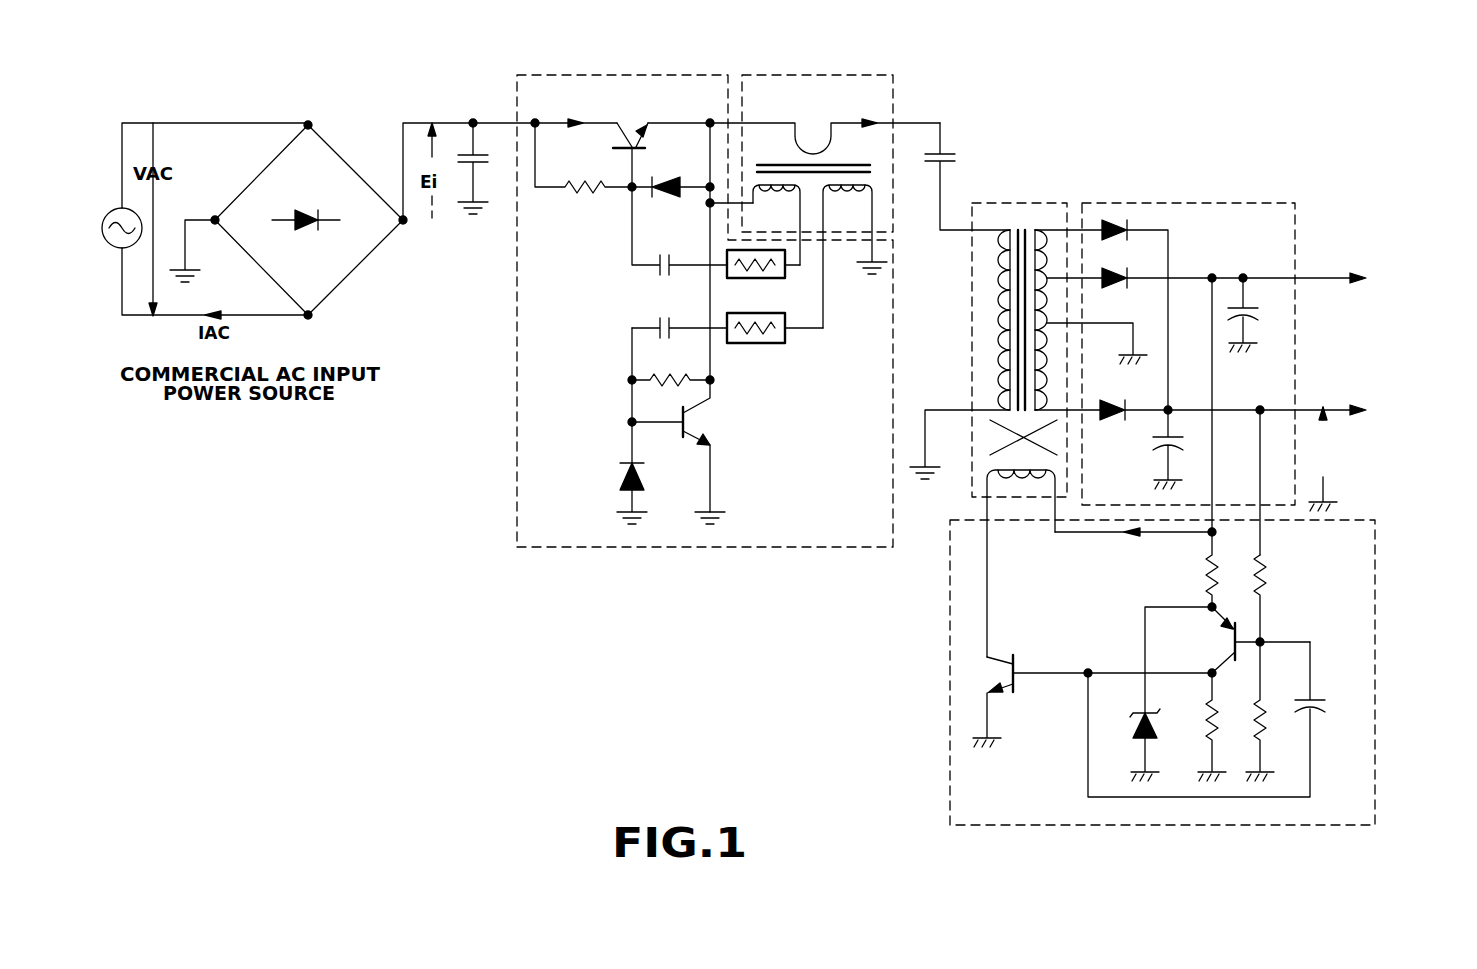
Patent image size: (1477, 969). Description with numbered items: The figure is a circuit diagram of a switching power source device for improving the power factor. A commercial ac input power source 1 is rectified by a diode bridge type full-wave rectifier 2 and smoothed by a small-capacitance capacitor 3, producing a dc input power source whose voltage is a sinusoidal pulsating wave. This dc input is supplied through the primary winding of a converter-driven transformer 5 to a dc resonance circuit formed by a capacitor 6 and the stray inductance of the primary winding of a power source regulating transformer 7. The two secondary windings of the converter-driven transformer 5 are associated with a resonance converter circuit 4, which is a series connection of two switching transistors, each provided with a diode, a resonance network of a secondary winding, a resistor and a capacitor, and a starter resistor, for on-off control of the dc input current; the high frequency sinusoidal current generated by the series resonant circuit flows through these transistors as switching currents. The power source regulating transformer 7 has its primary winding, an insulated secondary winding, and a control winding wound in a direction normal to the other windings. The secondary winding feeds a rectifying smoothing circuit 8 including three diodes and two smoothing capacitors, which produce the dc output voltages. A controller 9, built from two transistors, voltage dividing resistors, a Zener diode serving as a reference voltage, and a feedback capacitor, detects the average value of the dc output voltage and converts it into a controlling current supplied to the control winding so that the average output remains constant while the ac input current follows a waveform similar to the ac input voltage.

The commercial ac input power source 1 is at (112, 250).
The full-wave rectifier 2 is at (314, 125).
The small-capacitance capacitor 3 is at (468, 160).
The resonance converter circuit 4 is at (527, 76).
The converter-driven transformer 5 is at (822, 76).
The capacitor 6 is at (950, 152).
The power source regulating transformer 7 is at (977, 203).
The rectifying smoothing circuit 8 is at (1295, 250).
The controller 9 is at (978, 826).